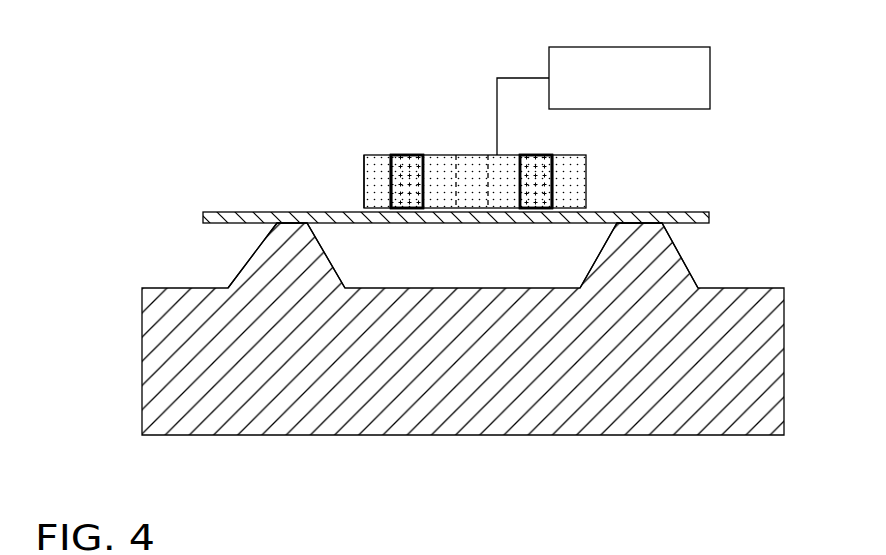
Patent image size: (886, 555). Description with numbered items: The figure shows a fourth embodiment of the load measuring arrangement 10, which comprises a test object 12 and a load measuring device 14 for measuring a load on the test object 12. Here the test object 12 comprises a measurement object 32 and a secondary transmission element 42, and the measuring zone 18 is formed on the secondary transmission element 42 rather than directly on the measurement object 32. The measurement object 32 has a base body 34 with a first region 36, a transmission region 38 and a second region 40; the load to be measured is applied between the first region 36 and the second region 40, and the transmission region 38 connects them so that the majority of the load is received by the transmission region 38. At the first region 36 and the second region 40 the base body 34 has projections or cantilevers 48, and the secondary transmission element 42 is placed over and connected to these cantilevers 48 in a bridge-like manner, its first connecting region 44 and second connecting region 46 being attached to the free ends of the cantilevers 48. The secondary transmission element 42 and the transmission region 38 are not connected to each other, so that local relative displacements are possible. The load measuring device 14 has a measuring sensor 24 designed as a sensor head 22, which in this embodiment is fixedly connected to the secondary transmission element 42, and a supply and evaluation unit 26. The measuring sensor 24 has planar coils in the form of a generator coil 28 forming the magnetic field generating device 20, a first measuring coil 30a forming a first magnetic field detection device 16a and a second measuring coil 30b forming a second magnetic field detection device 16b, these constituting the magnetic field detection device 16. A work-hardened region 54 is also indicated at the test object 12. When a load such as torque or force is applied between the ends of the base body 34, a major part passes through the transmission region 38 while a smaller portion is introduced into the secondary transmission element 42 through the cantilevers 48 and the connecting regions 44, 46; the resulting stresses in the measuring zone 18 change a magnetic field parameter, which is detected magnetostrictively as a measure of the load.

The load measuring arrangement 10 is at (298, 65).
The test object 12 is at (336, 448).
The load measuring device 14 is at (696, 129).
The magnetic field detection device 16 is at (396, 145).
The first magnetic field detection device 16a is at (395, 155).
The second magnetic field detection device 16b is at (530, 157).
The measuring zone 18 is at (503, 225).
The magnetic field generating device 20 is at (479, 155).
The sensor head 22 is at (588, 183).
The measuring sensor 24 is at (363, 177).
The supply and evaluation unit 26 is at (629, 78).
The generator coil 28 is at (471, 155).
The first measuring coil 30a is at (402, 195).
The second measuring coil 30b is at (555, 178).
The measurement object 32 is at (583, 413).
The base body 34 is at (215, 395).
The first region 36 is at (278, 368).
The transmission region 38 is at (460, 400).
The second region 40 is at (652, 358).
The secondary transmission element 42 is at (340, 210).
The first connecting region 44 is at (282, 220).
The second connecting region 46 is at (640, 218).
The cantilever 48 is at (260, 258).
The work-hardened region 54 is at (448, 232).